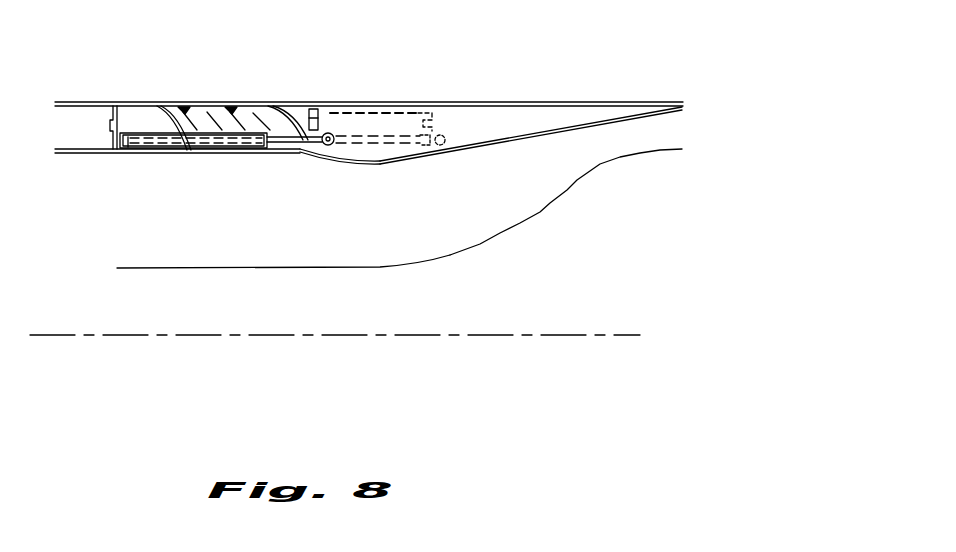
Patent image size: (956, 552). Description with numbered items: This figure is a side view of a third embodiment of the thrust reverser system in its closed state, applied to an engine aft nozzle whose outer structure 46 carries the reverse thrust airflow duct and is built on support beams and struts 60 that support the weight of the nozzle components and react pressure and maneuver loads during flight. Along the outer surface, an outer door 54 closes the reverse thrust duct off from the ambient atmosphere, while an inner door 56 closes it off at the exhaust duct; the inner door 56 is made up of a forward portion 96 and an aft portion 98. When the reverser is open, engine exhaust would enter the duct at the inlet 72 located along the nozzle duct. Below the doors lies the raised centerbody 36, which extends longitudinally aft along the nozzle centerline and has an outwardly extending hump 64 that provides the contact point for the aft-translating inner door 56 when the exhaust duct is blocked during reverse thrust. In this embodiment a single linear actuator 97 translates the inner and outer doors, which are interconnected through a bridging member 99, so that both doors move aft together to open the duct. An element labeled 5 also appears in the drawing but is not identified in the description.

The vanes / fins 5 is at (253, 112).
The centerbody 36 is at (323, 260).
The outer structure 46 is at (511, 112).
The outer door 54 is at (164, 100).
The inner door 56 is at (322, 163).
The support beams and struts 60 is at (113, 102).
The hump 64 is at (593, 170).
The inlet 72 is at (282, 153).
The forward portion 96 is at (246, 150).
The linear actuator 97 is at (128, 160).
The aft portion 98 is at (378, 163).
The bridging member 99 is at (318, 108).